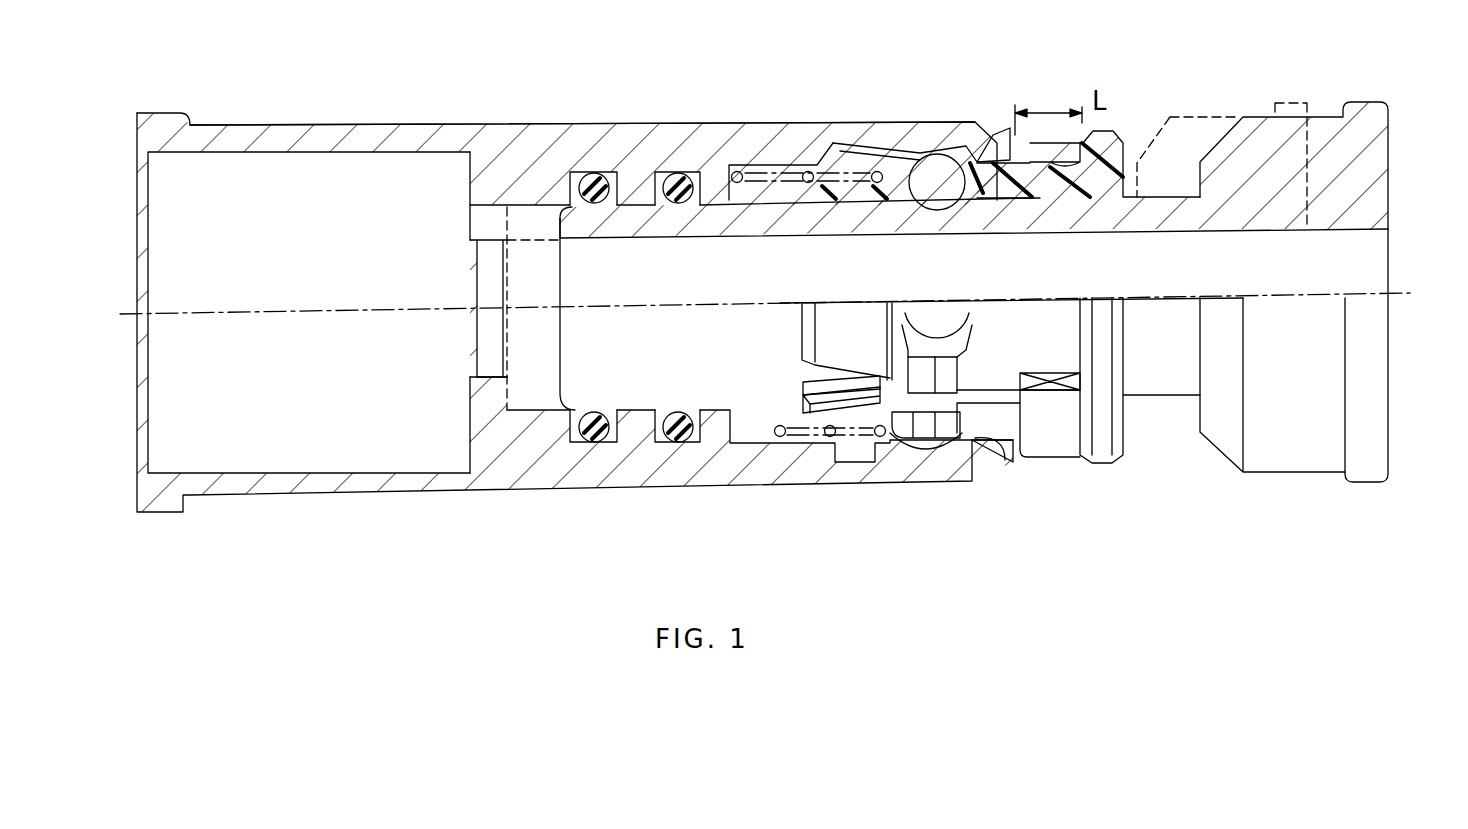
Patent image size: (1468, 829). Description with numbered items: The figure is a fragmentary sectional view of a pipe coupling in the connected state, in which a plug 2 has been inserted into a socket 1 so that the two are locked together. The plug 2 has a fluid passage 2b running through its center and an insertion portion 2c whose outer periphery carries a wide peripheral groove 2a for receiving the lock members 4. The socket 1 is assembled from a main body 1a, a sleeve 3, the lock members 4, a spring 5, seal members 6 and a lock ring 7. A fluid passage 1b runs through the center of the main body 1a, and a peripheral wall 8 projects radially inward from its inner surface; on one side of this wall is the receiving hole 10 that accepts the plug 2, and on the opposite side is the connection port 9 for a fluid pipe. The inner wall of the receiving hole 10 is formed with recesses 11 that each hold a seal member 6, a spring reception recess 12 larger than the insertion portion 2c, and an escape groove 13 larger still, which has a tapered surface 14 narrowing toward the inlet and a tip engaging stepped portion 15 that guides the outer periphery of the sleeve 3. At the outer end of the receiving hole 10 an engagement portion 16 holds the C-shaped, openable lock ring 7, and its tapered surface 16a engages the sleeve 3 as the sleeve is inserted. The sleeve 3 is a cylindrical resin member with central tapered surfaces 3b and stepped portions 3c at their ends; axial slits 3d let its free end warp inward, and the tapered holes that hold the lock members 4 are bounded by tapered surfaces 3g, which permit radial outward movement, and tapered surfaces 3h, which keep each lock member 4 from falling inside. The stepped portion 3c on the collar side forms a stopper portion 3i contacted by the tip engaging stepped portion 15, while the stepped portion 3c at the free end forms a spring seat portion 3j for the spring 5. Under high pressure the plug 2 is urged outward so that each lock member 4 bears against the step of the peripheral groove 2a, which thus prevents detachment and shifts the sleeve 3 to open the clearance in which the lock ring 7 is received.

The socket 1 is at (302, 124).
The main body 1a is at (508, 135).
The fluid passage 1b is at (488, 285).
The plug 2 is at (1290, 100).
The peripheral groove 2a is at (990, 212).
The fluid passage 2b is at (1365, 268).
The insertion portion 2c is at (762, 222).
The sleeve 3 is at (1126, 143).
The tapered surfaces 3b is at (923, 370).
The stepped portions 3c is at (945, 423).
The slits 3d is at (803, 383).
The tapered surfaces 3g is at (977, 310).
The tapered surfaces 3h is at (940, 342).
The stopper portion 3i is at (975, 440).
The spring seat portion 3j is at (890, 413).
The lock members 4 is at (938, 154).
The spring 5 is at (781, 165).
The seal members 6 is at (677, 172).
The lock ring 7 is at (1043, 150).
The peripheral wall 8 is at (490, 405).
The connection port 9 is at (205, 435).
The receiving hole 10 is at (535, 395).
The recesses 11 is at (677, 442).
The spring reception recess 12 is at (783, 443).
The escape groove 13 is at (847, 153).
The tapered surface 14 is at (893, 143).
The tip engaging stepped portion 15 is at (998, 130).
The engagement portion 16 is at (1007, 462).
The tapered surface 16a is at (1030, 425).